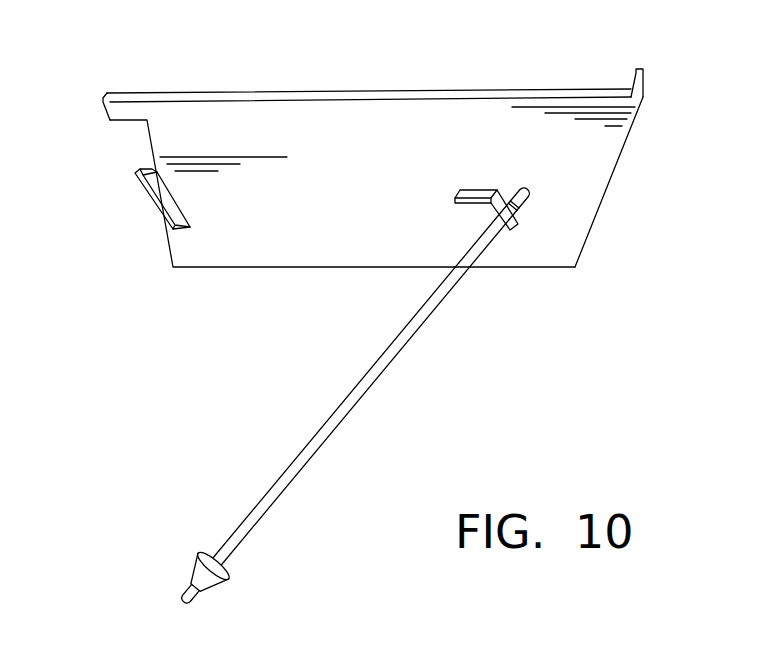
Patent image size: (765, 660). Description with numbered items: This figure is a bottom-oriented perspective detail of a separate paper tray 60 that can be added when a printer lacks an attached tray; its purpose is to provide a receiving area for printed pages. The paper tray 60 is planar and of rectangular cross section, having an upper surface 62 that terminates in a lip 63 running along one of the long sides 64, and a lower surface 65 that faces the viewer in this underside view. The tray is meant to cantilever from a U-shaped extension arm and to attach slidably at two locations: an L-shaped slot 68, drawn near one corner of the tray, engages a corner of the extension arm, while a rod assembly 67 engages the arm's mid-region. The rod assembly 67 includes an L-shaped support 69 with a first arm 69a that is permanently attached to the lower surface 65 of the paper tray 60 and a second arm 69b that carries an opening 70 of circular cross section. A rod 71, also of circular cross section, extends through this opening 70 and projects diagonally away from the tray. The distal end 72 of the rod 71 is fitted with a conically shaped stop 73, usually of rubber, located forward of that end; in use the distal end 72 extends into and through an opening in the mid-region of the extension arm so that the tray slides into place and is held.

The paper tray 60 is at (364, 178).
The upper surface 62 is at (306, 93).
The lip 63 is at (637, 67).
The long side 64 is at (620, 157).
The lower surface 65 is at (256, 230).
The rod assembly 67 is at (355, 395).
The L-shaped slot 68 is at (160, 155).
The L-shaped support 69 is at (493, 194).
The first arm 69a is at (473, 190).
The second arm 69b is at (490, 212).
The opening 70 is at (497, 240).
The rod 71 is at (310, 440).
The distal end 72 is at (185, 595).
The conically shaped stop 73 is at (198, 567).